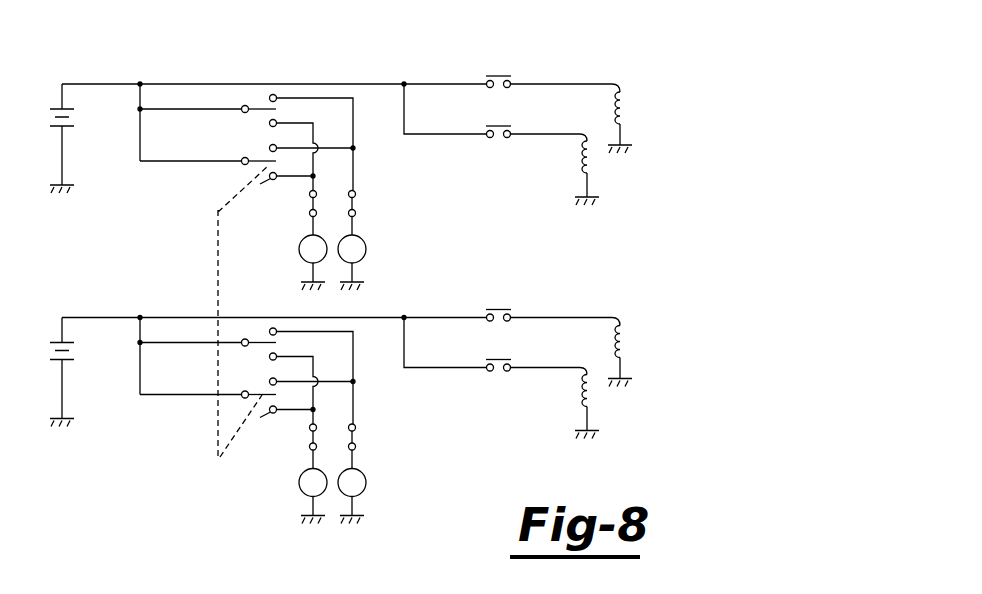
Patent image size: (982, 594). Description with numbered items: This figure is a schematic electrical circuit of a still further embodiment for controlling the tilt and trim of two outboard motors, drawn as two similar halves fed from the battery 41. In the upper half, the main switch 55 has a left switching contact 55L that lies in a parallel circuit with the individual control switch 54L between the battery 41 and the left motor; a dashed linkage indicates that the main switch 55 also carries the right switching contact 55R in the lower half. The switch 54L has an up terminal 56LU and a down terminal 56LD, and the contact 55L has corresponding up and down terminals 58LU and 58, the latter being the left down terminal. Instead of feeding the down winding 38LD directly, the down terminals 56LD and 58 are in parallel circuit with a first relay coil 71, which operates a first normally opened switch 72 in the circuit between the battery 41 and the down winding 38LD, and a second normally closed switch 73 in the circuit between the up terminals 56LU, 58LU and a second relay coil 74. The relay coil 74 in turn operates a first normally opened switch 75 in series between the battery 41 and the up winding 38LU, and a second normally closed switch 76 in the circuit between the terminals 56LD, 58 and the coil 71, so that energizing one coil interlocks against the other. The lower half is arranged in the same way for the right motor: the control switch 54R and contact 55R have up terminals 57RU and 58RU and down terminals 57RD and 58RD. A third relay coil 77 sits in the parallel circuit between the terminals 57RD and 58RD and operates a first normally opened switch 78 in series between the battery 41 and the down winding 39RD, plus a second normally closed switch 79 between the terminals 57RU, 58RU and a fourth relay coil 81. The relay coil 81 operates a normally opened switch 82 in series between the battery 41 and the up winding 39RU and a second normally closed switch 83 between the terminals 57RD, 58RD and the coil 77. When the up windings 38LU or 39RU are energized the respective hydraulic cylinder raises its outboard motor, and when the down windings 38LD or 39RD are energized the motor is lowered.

The battery 41 is at (73, 124).
The individual control switch 54L is at (262, 107).
The switching contact 55L is at (249, 158).
The terminal 56LD is at (275, 95).
The terminal 56LU is at (276, 121).
The switch terminal 58 is at (276, 147).
The terminal 58LU is at (258, 178).
The main switch 55 is at (216, 244).
The second normally closed switch 73 is at (308, 202).
The second normally closed switch 76 is at (350, 200).
The second relay coil 74 is at (298, 248).
The first relay coil 71 is at (366, 249).
The first normally opened switch 75 is at (496, 76).
The first normally opened switch 72 is at (497, 125).
The up winding 38LU is at (623, 112).
The down winding 38LD is at (590, 173).
The individual control switch 54R is at (263, 333).
The switching contact 55R is at (257, 391).
The switch terminal 57RD is at (274, 327).
The switch terminal 57RU is at (276, 355).
The switch terminal 58RD is at (276, 380).
The switch terminal 58RU is at (270, 412).
The second normally closed switch 79 is at (309, 440).
The second normally closed switch 83 is at (350, 436).
The fourth relay coil 81 is at (298, 496).
The third relay coil 77 is at (363, 497).
The normally opened switch 82 is at (497, 310).
The first normally opened switch 78 is at (498, 360).
The up winding 39RU is at (624, 343).
The down winding 39RD is at (590, 403).